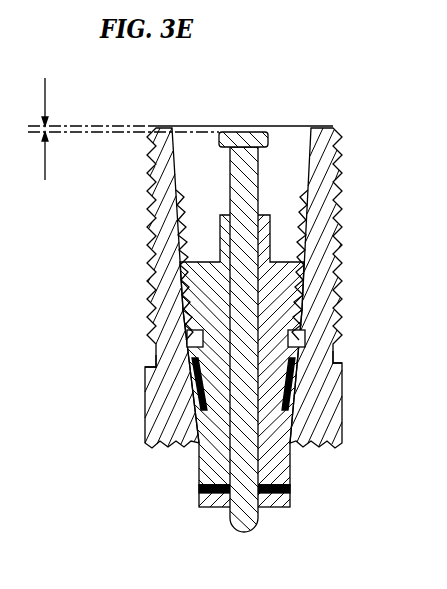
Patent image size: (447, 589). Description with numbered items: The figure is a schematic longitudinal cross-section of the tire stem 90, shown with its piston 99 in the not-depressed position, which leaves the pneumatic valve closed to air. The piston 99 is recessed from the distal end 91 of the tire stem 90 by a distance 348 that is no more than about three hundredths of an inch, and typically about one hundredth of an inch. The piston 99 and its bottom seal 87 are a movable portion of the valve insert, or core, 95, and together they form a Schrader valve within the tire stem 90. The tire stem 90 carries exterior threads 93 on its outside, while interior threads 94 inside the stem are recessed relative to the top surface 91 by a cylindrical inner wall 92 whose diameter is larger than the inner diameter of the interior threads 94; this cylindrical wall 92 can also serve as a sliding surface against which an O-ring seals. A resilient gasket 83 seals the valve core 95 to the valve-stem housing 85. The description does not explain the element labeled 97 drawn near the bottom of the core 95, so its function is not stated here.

The distance 348 is at (123, 117).
The tire stem 90 is at (303, 80).
The distal end 91 is at (313, 127).
The cylindrical inner wall 92 is at (312, 150).
The exterior threads 93 is at (153, 178).
The interior threads 94 is at (188, 200).
The valve insert 95 is at (283, 261).
The piston 99 is at (233, 128).
The valve-stem housing 85 is at (147, 375).
The resilient gasket 83 is at (195, 380).
The lower nut 97 is at (228, 452).
The bottom seal 87 is at (200, 490).